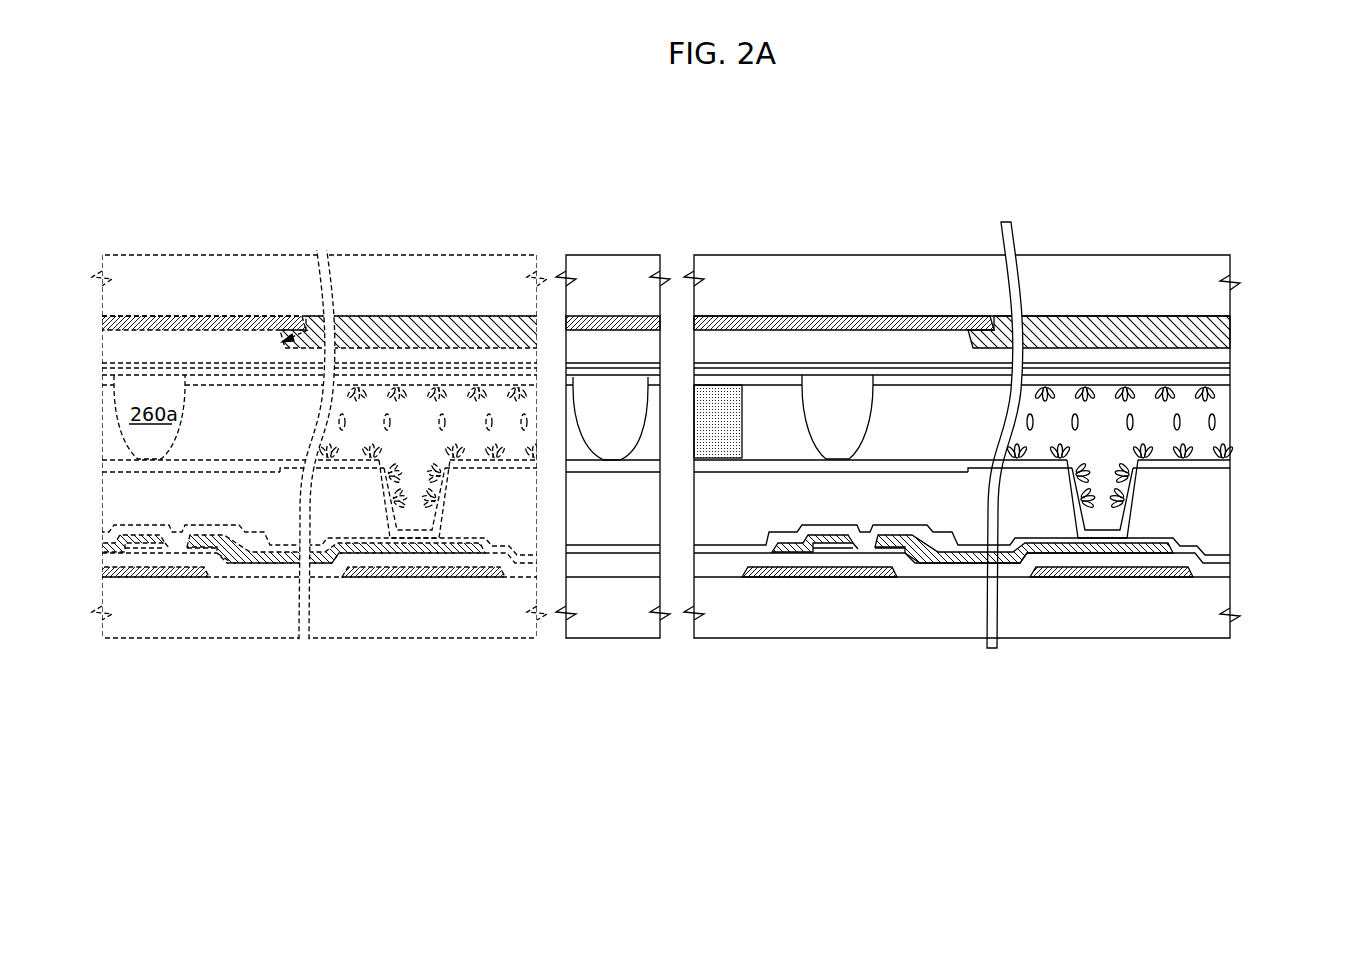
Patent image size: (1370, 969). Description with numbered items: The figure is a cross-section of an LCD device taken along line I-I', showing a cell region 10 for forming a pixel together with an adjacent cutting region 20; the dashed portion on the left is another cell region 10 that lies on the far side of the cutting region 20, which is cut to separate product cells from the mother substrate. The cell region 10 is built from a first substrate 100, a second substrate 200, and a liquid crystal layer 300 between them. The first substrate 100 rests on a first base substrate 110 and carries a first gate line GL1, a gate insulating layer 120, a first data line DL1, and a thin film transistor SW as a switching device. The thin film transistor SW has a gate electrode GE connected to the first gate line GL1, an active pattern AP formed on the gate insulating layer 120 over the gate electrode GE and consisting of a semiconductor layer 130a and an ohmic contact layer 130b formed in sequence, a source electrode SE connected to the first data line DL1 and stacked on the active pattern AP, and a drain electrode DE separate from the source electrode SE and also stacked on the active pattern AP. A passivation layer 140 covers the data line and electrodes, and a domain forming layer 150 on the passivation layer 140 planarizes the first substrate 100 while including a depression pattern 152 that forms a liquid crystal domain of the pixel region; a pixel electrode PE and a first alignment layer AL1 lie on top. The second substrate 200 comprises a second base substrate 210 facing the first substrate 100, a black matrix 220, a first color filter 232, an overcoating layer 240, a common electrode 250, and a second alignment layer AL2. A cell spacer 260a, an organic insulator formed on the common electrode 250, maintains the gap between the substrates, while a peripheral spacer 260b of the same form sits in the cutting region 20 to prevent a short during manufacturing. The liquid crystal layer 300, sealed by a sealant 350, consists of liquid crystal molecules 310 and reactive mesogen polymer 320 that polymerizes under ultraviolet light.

The cell region 10 is at (1118, 212).
The cutting region 20 is at (616, 404).
The first substrate 100 is at (1027, 615).
The first base substrate 110 is at (1232, 598).
The gate insulating layer 120 is at (1222, 572).
The passivation layer 140 is at (1222, 560).
The domain forming layer 150 is at (1222, 535).
The depression pattern 152 is at (1103, 521).
The pixel electrode PE is at (1232, 470).
The first alignment layer AL1 is at (1232, 462).
The first gate line GL1 is at (748, 576).
The first data line DL1 is at (787, 554).
The thin film transistor SW is at (957, 657).
The source electrode SE is at (815, 548).
The gate electrode GE is at (847, 578).
The drain electrode DE is at (883, 548).
The active pattern AP is at (912, 637).
The semiconductor layer 130a is at (917, 562).
The ohmic contact layer 130b is at (935, 566).
The second substrate 200 is at (1027, 428).
The second base substrate 210 is at (1233, 268).
The black matrix 220 is at (865, 316).
The first color filter 232 is at (1000, 330).
The overcoating layer 240 is at (1232, 346).
The common electrode 250 is at (1232, 365).
The second alignment layer AL2 is at (1232, 383).
The cell spacer 260a is at (858, 424).
The peripheral spacer 260b is at (633, 424).
The sealant 350 is at (734, 429).
The liquid crystal layer 300 is at (1183, 448).
The liquid crystal molecules 310 is at (1217, 425).
The reactive mesogen polymer 320 is at (1170, 394).